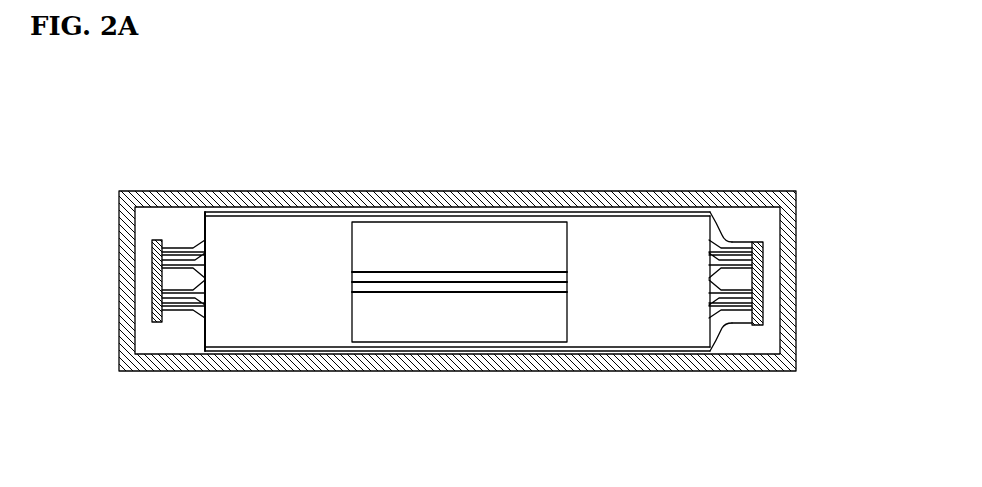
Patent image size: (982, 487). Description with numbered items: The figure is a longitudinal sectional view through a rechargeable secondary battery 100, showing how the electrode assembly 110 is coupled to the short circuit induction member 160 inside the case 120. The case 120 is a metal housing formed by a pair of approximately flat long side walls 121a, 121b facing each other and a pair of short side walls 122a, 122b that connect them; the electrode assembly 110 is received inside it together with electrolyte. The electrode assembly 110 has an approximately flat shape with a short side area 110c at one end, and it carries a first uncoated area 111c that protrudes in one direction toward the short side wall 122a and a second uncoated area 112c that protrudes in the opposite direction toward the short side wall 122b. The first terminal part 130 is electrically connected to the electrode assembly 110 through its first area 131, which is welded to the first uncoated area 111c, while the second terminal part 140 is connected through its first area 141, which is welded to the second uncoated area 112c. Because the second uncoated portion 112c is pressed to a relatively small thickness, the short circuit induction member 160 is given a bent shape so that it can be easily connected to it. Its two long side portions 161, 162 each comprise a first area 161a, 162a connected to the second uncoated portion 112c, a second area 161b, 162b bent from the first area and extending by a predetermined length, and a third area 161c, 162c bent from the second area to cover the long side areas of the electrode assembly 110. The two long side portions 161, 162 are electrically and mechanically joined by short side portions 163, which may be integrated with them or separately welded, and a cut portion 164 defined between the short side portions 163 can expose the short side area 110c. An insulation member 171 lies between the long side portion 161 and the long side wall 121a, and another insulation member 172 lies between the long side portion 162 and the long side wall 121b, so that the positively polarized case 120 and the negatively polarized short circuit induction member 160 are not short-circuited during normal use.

The rechargeable secondary battery 100 is at (845, 149).
The electrode assembly 110 is at (431, 321).
The short side area 110c is at (525, 255).
The first uncoated area 111c is at (178, 311).
The second uncoated area 112c is at (763, 326).
The case 120 is at (457, 277).
The long side wall 121a is at (443, 372).
The long side wall 121b is at (458, 191).
The short side wall 122a is at (118, 332).
The short side wall 122b is at (793, 304).
The first terminal part 130 is at (151, 293).
The first area 131 is at (137, 329).
The second terminal part 140 is at (765, 283).
The first area 141 is at (786, 306).
The short circuit induction member 160 is at (485, 285).
The long side portion 161 is at (504, 390).
The first area 161a is at (767, 368).
The second area 161b is at (725, 330).
The third area 161c is at (655, 354).
The long side portion 162 is at (505, 177).
The first area 162a is at (768, 199).
The second area 162b is at (727, 235).
The third area 162c is at (655, 212).
The short side portion 163 is at (327, 225).
The cut portion 164 is at (567, 243).
The insulation member 171 is at (237, 353).
The insulation member 172 is at (242, 212).